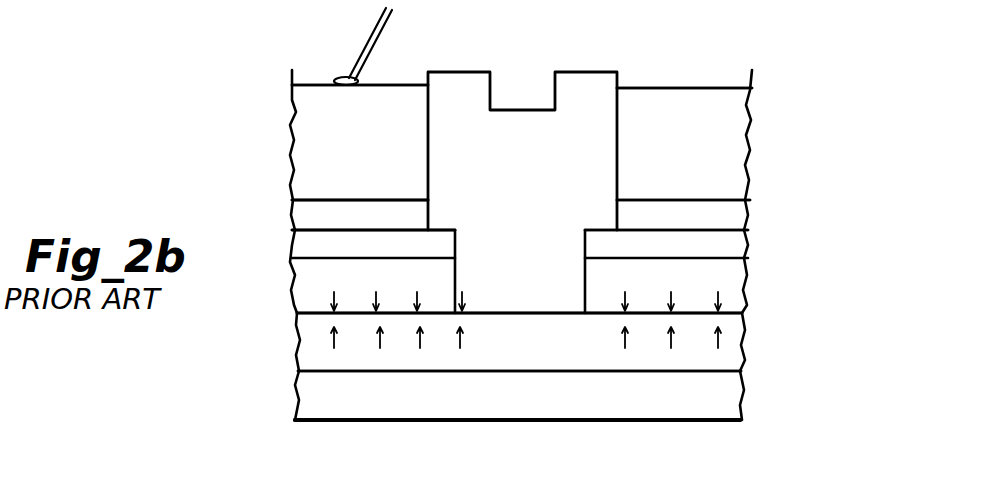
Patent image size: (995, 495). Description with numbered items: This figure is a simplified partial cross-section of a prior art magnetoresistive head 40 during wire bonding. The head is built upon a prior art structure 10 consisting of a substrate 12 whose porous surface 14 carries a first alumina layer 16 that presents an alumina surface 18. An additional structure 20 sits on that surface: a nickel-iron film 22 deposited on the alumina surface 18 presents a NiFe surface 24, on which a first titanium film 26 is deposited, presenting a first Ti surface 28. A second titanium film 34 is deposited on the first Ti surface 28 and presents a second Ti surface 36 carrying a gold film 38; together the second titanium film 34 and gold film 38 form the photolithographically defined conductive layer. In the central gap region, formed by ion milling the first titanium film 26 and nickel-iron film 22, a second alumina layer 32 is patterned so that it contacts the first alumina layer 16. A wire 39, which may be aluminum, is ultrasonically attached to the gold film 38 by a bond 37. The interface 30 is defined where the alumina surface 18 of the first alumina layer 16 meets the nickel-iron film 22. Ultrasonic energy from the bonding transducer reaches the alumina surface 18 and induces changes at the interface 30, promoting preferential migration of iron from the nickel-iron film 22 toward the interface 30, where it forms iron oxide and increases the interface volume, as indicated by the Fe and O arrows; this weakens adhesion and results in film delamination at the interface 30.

The prior art structure 10 is at (278, 367).
The substrate 12 is at (720, 425).
The porous surface 14 is at (730, 380).
The first alumina layer 16 is at (740, 355).
The alumina surface 18 is at (743, 325).
The additional structure 20 is at (278, 252).
The nickel-iron film 22 is at (740, 296).
The NiFe surface 24 is at (740, 258).
The first titanium film 26 is at (738, 240).
The first Ti surface 28 is at (737, 226).
The interface 30 is at (748, 320).
The second alumina layer 32 is at (604, 92).
The second titanium film 34 is at (730, 205).
The second Ti surface 36 is at (680, 200).
The gold film 38 is at (697, 96).
The bond 37 is at (340, 78).
The wire 39 is at (380, 40).
The magnetoresistive head 40 is at (176, 150).